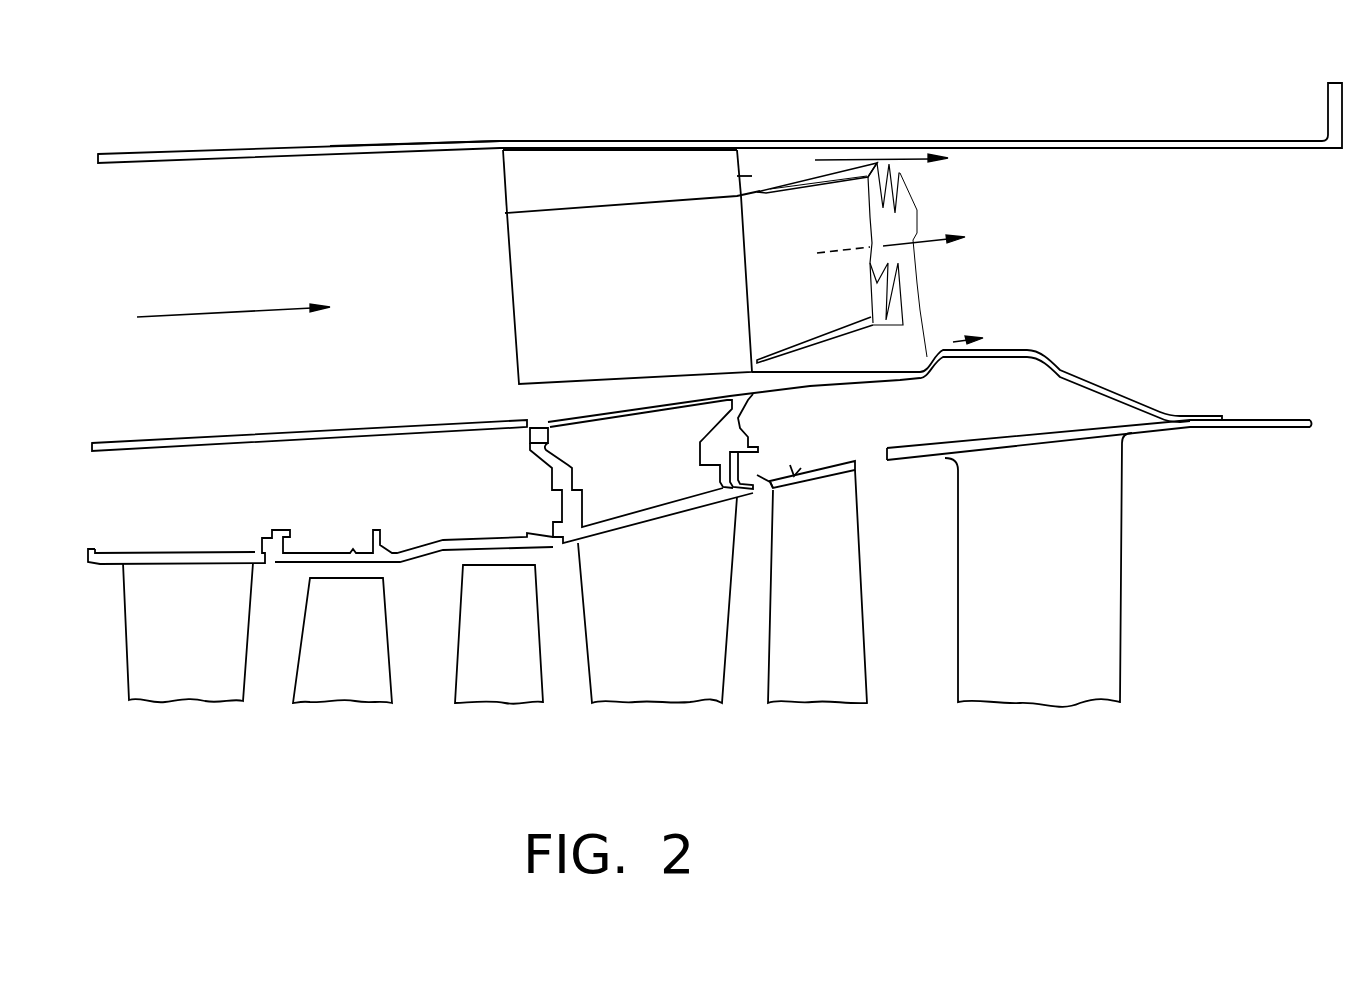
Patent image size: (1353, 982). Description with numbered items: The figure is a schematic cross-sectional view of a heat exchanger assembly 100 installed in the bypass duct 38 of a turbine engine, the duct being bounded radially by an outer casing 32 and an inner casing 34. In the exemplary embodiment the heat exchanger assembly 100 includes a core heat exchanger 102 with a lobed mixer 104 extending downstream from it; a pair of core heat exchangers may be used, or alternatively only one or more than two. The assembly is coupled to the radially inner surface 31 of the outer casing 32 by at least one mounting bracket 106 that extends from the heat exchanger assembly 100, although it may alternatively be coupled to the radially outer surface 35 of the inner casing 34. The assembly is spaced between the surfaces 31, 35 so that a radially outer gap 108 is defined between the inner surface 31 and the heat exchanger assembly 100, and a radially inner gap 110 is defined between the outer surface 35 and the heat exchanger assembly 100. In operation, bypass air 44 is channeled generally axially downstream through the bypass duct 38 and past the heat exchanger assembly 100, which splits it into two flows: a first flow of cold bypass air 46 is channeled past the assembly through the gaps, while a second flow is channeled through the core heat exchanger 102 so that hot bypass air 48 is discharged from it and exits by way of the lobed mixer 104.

The heat exchanger assembly 100 is at (712, 58).
The radially inner surface 31 is at (388, 150).
The outer casing 32 is at (187, 150).
The inner casing 34 is at (150, 440).
The radially outer surface 35 is at (400, 420).
The bypass duct 38 is at (253, 250).
The bypass air 44 is at (203, 317).
The cold bypass air 46 is at (903, 160).
The hot bypass air 48 is at (928, 240).
The core heat exchanger 102 is at (525, 308).
The lobed mixer 104 is at (807, 198).
The mounting bracket 106 is at (553, 167).
The radially outer gap 108 is at (730, 177).
The radially inner gap 110 is at (780, 375).